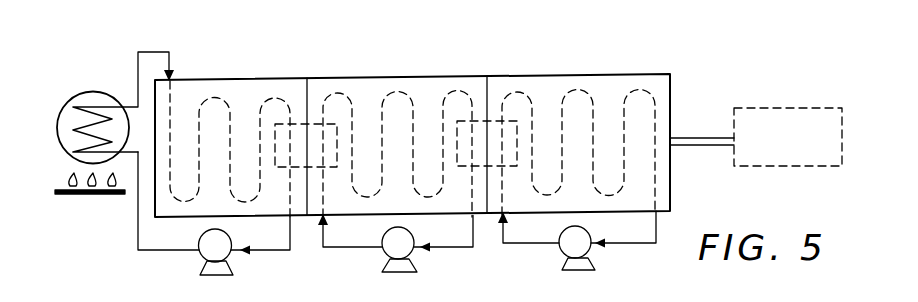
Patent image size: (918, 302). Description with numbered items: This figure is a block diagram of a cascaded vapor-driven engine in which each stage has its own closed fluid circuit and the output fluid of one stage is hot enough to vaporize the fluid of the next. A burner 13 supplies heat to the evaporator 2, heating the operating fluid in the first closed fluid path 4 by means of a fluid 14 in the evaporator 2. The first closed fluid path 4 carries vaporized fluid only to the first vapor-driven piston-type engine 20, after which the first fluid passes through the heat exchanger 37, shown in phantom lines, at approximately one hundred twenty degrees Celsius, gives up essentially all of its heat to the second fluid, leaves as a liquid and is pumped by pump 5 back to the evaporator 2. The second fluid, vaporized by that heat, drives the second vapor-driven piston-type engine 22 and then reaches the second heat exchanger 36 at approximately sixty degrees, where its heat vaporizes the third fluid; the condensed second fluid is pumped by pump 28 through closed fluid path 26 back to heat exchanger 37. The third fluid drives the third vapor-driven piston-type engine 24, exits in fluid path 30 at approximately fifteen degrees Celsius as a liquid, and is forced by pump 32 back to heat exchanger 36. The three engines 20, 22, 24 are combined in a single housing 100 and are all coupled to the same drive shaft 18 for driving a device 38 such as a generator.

The evaporator 2 is at (100, 92).
The first closed fluid path 4 is at (138, 52).
The pump 5 is at (199, 243).
The burner 13 is at (92, 194).
The fluid 14 is at (68, 120).
The drive shaft 18 is at (718, 137).
The first vapor-driven piston-type engine 20 is at (258, 79).
The second vapor-driven piston-type engine 22 is at (387, 77).
The third vapor-driven piston-type engine 24 is at (585, 73).
The closed fluid path 26 is at (377, 248).
The pump 28 is at (403, 229).
The fluid path 30 is at (657, 258).
The pump 32 is at (561, 231).
The second heat exchanger 36 is at (457, 137).
The heat exchanger 37 is at (332, 140).
The device 38 is at (825, 108).
The single housing 100 is at (649, 53).